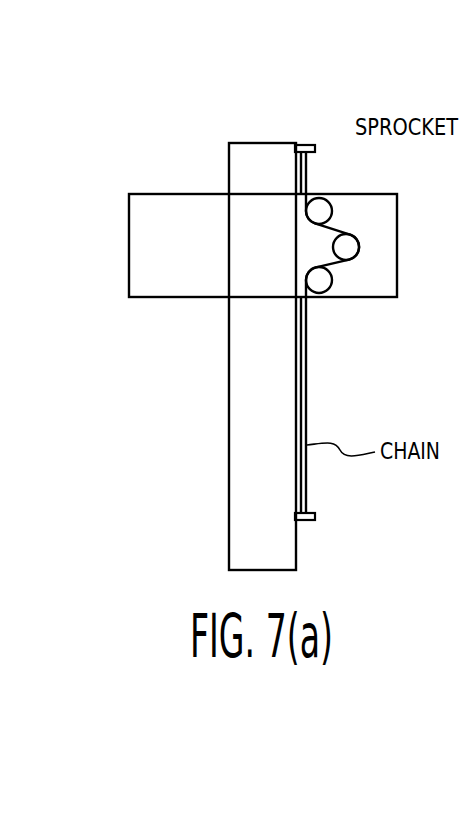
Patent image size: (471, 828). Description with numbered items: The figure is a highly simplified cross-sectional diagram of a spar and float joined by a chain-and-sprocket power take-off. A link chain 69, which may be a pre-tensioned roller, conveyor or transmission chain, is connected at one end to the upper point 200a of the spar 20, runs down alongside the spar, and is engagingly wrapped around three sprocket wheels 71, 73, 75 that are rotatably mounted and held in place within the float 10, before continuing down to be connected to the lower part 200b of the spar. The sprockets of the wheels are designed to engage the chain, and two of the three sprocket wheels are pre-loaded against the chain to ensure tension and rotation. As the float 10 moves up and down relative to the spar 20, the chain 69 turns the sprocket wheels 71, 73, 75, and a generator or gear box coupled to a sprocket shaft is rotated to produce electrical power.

The float 10 is at (150, 193).
The spar 20 is at (243, 142).
The upper point of the spar 200a is at (317, 147).
The lower part of the spar 200b is at (315, 517).
The link chain 69 is at (307, 382).
The sprocket wheel 71 is at (323, 206).
The sprocket wheel 73 is at (346, 247).
The sprocket wheel 75 is at (319, 280).